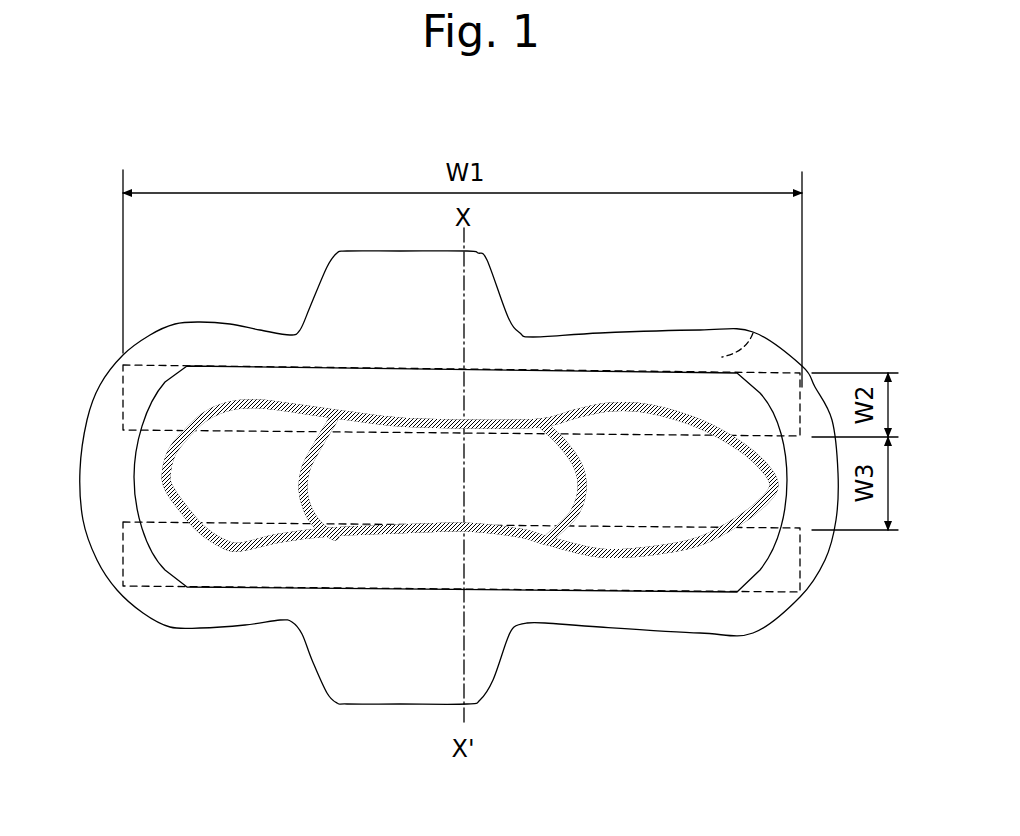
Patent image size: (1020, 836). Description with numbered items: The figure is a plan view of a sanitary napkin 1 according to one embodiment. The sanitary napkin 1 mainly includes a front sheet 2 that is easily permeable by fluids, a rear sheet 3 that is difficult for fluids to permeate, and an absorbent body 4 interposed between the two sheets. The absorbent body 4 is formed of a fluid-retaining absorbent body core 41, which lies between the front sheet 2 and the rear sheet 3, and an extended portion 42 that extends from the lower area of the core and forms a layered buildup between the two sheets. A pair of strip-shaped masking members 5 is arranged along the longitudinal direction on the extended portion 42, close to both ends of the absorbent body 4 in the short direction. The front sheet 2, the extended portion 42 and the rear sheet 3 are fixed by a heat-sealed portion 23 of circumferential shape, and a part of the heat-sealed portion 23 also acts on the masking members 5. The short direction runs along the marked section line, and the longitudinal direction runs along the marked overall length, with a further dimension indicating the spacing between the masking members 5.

The sanitary napkin 1 is at (838, 264).
The front sheet 2 is at (668, 353).
The rear sheet 3 is at (753, 333).
The absorbent body 4 is at (715, 493).
The masking members 5 is at (140, 397).
The heat-sealed portion 23 is at (227, 553).
The absorbent body core 41 is at (360, 457).
The extended portion 42 is at (311, 563).